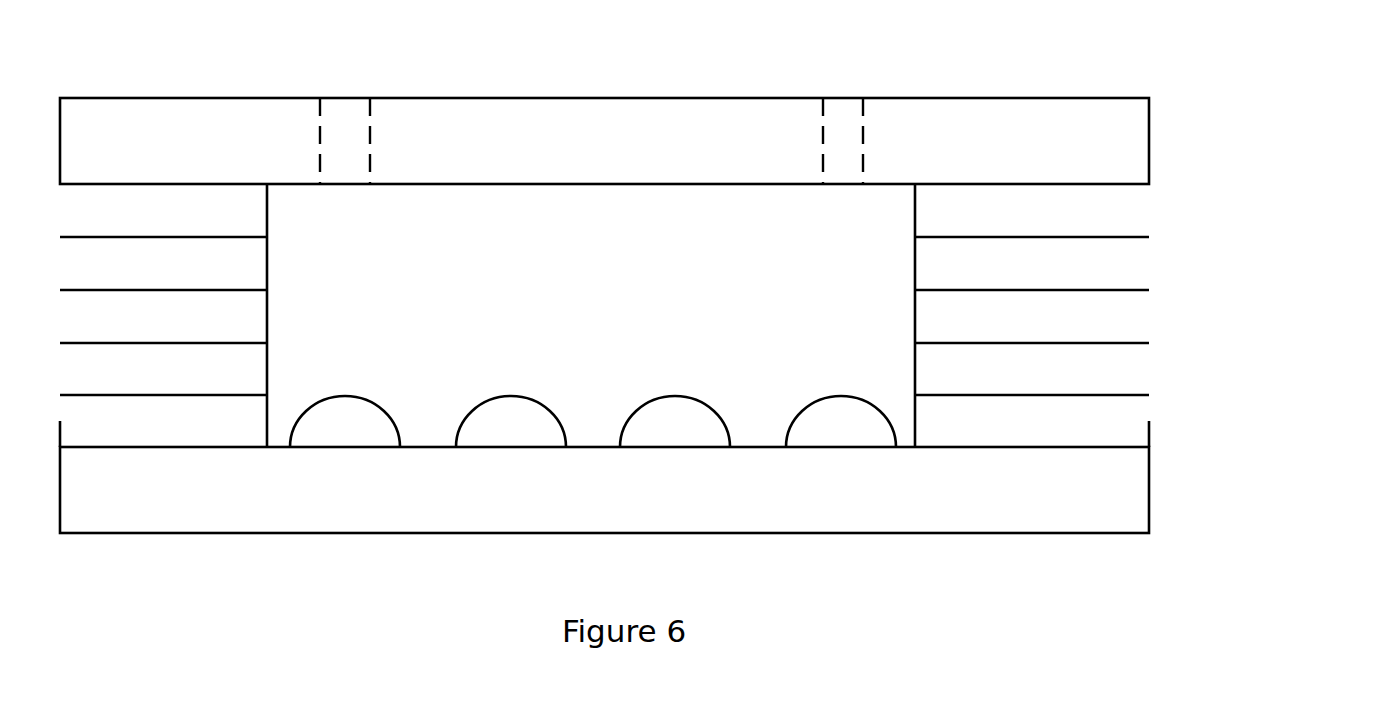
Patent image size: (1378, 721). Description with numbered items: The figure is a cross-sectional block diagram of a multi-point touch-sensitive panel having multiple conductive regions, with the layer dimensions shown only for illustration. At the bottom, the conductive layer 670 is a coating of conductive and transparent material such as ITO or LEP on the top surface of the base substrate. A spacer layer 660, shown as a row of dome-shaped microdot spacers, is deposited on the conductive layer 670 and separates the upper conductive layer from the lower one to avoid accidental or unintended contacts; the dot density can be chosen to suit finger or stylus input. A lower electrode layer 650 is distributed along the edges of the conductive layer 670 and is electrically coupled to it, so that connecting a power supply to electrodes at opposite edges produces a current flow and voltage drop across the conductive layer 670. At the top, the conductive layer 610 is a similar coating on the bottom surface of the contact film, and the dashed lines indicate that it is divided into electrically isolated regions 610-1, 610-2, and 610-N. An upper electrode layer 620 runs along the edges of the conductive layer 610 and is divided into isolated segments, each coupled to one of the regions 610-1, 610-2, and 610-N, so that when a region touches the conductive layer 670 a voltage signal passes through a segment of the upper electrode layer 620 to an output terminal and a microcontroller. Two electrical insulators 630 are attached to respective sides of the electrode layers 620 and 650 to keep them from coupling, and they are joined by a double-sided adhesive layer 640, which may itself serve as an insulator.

The upper conductive layer 610 is at (716, 118).
The conductive region 610-1 is at (250, 160).
The conductive region 610-N is at (527, 159).
The conductive region 610-2 is at (960, 159).
The upper electrode layer 620 is at (716, 177).
The electrical insulator 630 is at (716, 282).
The double-sided adhesive layer 640 is at (716, 282).
The lower electrode layer 650 is at (716, 387).
The spacer layer 660 is at (593, 367).
The lower conductive layer 670 is at (716, 469).